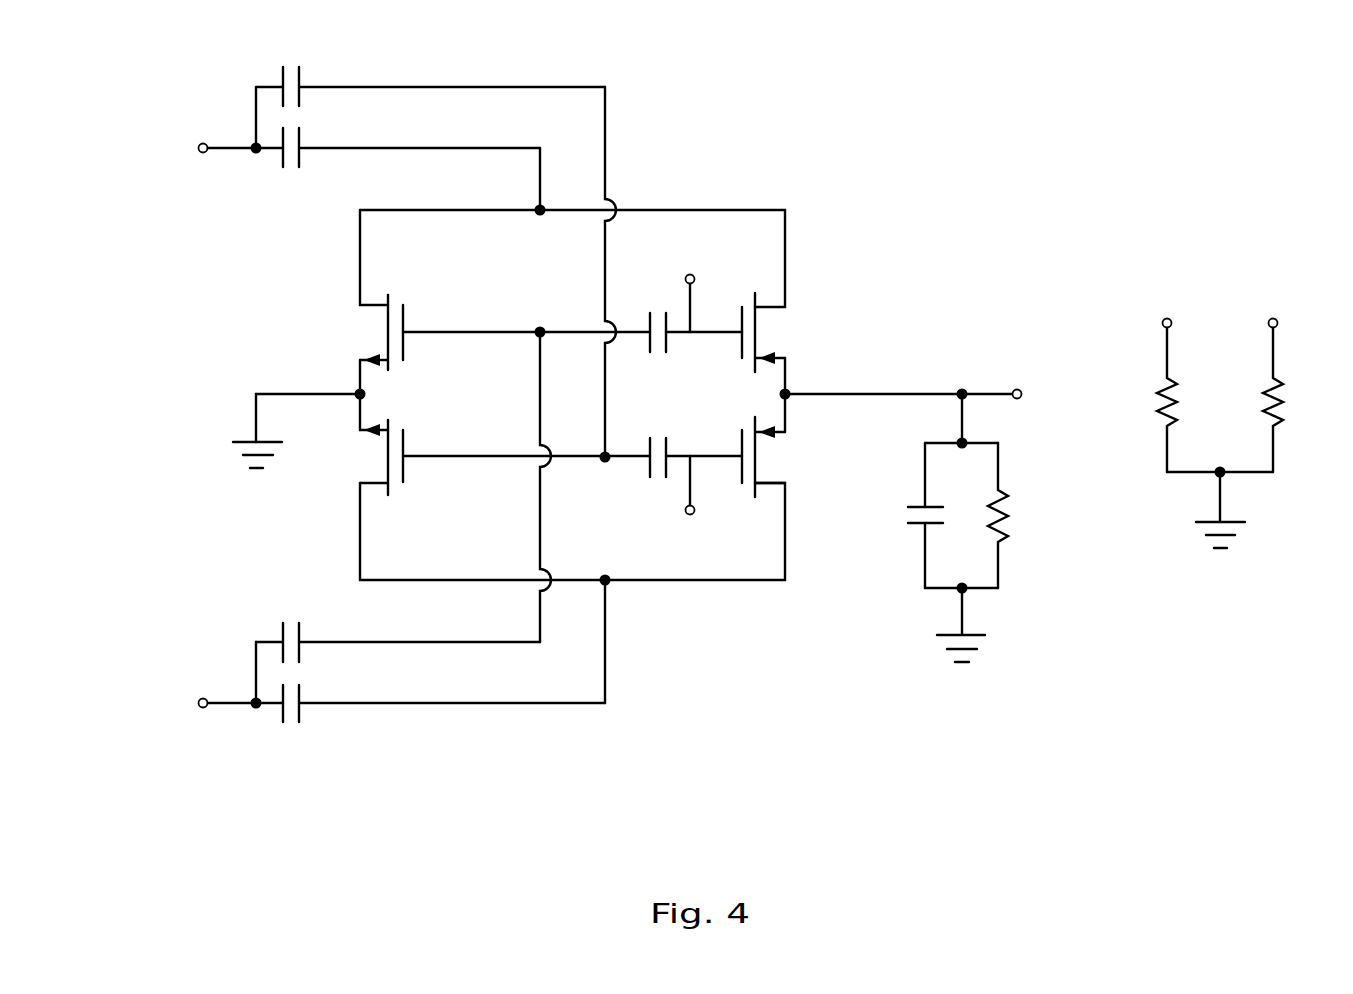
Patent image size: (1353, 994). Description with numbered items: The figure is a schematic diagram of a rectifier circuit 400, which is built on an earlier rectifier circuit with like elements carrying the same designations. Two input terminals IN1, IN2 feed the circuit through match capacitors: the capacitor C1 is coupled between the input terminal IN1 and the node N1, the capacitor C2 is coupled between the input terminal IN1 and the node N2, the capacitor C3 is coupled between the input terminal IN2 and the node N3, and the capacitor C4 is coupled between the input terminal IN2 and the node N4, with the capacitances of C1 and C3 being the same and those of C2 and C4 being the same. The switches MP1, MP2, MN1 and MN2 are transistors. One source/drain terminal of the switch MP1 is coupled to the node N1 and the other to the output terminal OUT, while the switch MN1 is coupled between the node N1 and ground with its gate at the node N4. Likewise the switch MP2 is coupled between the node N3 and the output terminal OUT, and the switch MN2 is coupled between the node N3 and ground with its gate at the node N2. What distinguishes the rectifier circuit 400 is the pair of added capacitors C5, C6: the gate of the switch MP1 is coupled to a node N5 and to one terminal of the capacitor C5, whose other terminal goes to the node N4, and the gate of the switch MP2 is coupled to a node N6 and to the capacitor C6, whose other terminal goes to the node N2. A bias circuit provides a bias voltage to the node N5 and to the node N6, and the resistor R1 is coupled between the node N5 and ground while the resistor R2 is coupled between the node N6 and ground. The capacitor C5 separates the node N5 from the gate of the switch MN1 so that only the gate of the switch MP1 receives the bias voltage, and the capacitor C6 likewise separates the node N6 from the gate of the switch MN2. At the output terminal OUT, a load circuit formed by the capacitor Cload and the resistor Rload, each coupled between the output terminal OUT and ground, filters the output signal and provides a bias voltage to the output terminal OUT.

The rectifier circuit 400 is at (1252, 45).
The switch MN1 is at (361, 332).
The switch MN2 is at (360, 457).
The switch MP1 is at (785, 332).
The switch MP2 is at (786, 457).
The capacitor C1 is at (411, 156).
The capacitor C2 is at (430, 95).
The capacitor C3 is at (398, 650).
The capacitor C4 is at (444, 712).
The capacitor C5 is at (656, 318).
The capacitor C6 is at (657, 473).
The resistor R1 is at (1183, 379).
The resistor R2 is at (1291, 379).
The capacitor Cload is at (895, 515).
The resistor Rload is at (1031, 515).
The input terminal IN1 is at (215, 125).
The input terminal IN2 is at (215, 680).
The output terminal OUT is at (901, 402).
The node N1 is at (542, 227).
The node N2 is at (605, 474).
The node N3 is at (605, 564).
The node N4 is at (540, 318).
The node N5 is at (691, 286).
The node N6 is at (690, 502).